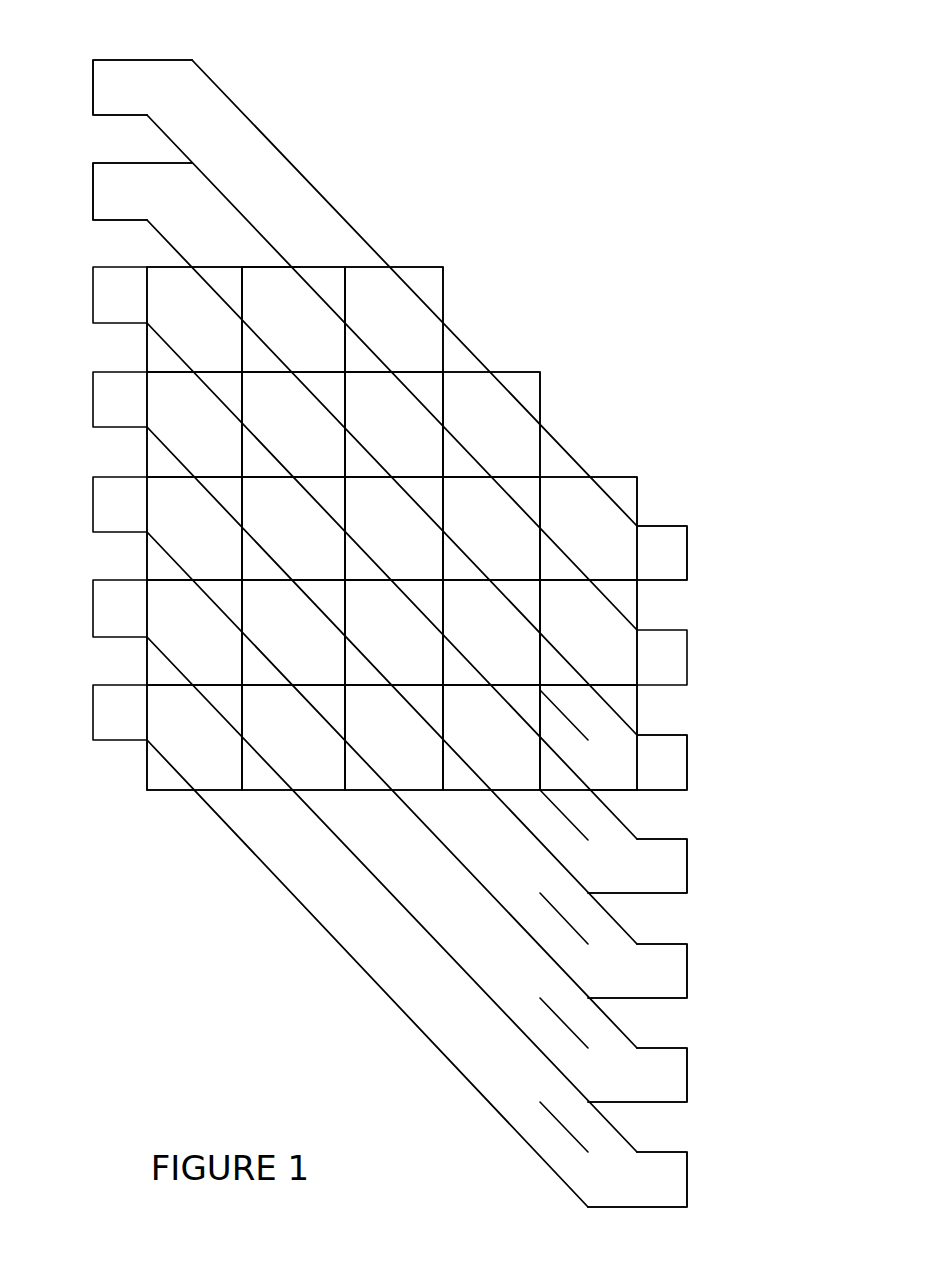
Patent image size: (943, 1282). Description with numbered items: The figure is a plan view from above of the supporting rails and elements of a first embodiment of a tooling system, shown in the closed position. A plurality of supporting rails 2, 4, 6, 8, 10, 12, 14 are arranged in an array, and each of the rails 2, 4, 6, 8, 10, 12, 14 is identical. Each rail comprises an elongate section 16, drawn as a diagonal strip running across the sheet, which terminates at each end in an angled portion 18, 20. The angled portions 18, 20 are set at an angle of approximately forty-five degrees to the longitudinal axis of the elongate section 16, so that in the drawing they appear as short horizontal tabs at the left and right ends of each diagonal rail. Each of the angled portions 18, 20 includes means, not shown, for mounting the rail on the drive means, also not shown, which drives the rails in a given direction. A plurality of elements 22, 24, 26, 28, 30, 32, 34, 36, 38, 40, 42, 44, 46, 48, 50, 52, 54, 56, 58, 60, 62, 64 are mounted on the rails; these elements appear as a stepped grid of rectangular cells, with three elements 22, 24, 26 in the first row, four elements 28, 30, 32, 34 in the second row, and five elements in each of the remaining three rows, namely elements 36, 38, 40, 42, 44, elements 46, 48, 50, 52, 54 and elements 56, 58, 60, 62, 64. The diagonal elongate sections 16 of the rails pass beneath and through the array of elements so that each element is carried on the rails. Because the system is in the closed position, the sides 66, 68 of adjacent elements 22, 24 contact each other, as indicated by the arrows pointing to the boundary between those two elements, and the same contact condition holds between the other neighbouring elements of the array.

The supporting rail 2 is at (338, 232).
The supporting rail 4 is at (182, 215).
The supporting rail 6 is at (624, 752).
The supporting rail 8 is at (611, 859).
The supporting rail 10 is at (603, 961).
The supporting rail 12 is at (594, 1057).
The supporting rail 14 is at (603, 1167).
The elongate section 16 is at (298, 207).
The angled portion 18 is at (138, 75).
The angled portion 20 is at (667, 555).
The element 22 is at (180, 335).
The element 24 is at (308, 335).
The element 26 is at (380, 335).
The element 28 is at (180, 440).
The element 30 is at (308, 440).
The element 32 is at (380, 440).
The element 34 is at (506, 440).
The element 36 is at (180, 545).
The element 38 is at (308, 545).
The element 40 is at (380, 545).
The element 42 is at (506, 545).
The element 44 is at (574, 545).
The element 46 is at (180, 648).
The element 48 is at (308, 648).
The element 50 is at (380, 648).
The element 52 is at (506, 648).
The element 54 is at (574, 648).
The element 56 is at (180, 753).
The element 58 is at (308, 753).
The element 60 is at (380, 753).
The element 62 is at (506, 753).
The element 64 is at (574, 753).
The side 66 is at (236, 280).
The side 68 is at (267, 306).